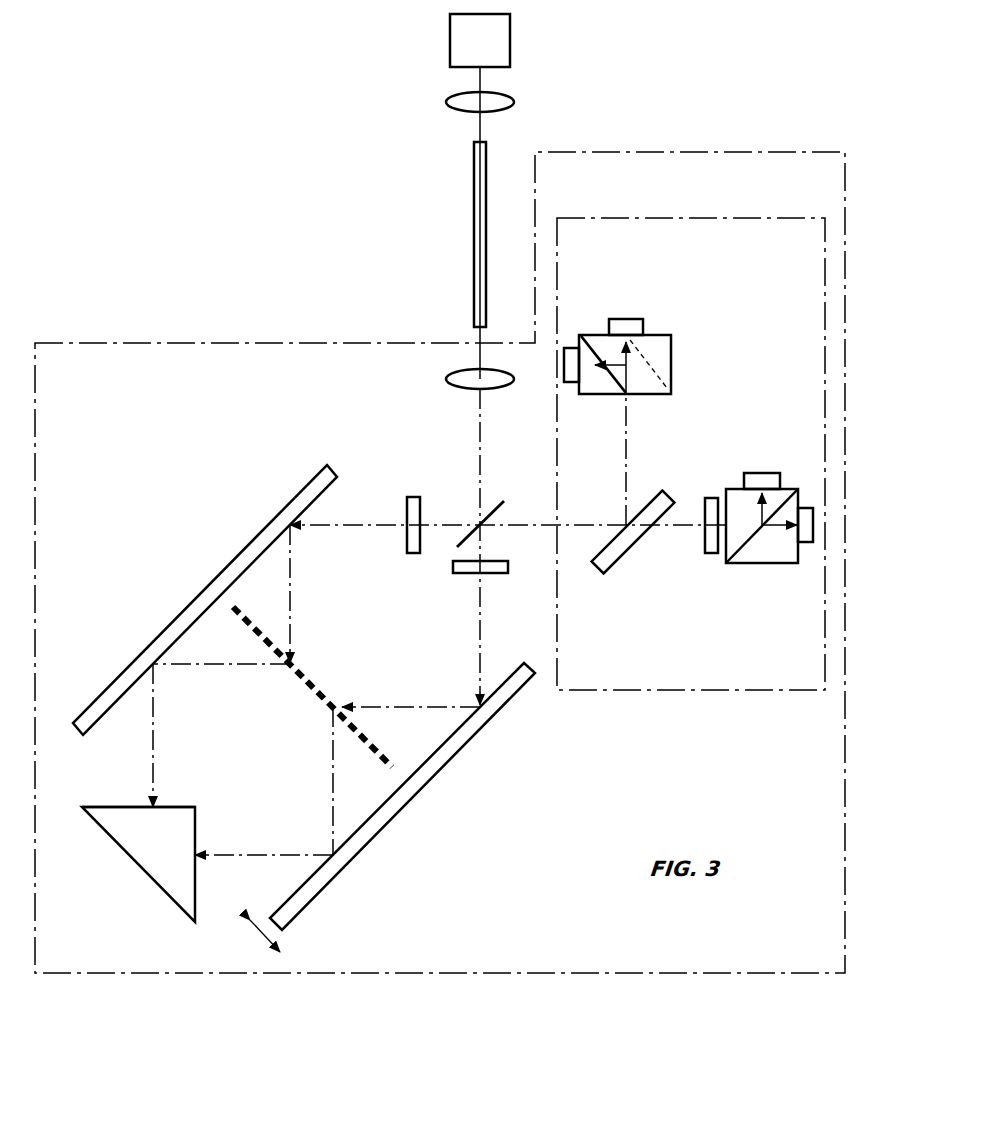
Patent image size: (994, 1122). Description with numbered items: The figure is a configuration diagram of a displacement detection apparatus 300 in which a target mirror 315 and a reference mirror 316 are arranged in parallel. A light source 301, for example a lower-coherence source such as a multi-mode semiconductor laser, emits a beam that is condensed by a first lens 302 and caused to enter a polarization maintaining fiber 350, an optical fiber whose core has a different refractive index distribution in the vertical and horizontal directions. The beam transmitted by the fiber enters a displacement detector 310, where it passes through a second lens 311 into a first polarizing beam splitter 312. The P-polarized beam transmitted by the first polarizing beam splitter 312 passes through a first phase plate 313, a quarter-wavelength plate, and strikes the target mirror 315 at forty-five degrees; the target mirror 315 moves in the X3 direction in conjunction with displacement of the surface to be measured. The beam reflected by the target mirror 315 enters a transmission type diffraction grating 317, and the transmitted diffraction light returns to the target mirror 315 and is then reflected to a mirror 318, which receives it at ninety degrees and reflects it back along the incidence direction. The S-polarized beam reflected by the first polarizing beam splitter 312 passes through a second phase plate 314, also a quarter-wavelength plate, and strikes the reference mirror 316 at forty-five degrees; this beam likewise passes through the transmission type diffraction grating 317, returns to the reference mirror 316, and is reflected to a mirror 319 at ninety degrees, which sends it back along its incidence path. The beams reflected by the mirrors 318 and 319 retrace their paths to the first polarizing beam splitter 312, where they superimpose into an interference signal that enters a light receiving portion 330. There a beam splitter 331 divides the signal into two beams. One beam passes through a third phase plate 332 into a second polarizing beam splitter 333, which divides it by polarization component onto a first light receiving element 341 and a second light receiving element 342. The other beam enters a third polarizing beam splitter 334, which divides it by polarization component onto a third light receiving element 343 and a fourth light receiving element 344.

The displacement detection apparatus 300 is at (158, 160).
The light source 301 is at (503, 40).
The first lens 302 is at (447, 102).
The polarization maintaining fiber 350 is at (480, 243).
The displacement detector 310 is at (107, 343).
The second lens 311 is at (455, 379).
The first polarizing beam splitter 312 is at (455, 545).
The first phase plate 313 is at (465, 567).
The second phase plate 314 is at (413, 497).
The target mirror 315 is at (413, 788).
The reference mirror 316 is at (207, 593).
The transmission type diffraction grating 317 is at (330, 693).
The mirror 318 is at (197, 827).
The mirror 319 is at (170, 805).
The light receiving portion 330 is at (752, 218).
The beam splitter 331 is at (617, 547).
The third phase plate 332 is at (713, 502).
The second polarizing beam splitter 333 is at (798, 497).
The third polarizing beam splitter 334 is at (668, 345).
The first light receiving element 341 is at (808, 542).
The second light receiving element 342 is at (757, 478).
The third light receiving element 343 is at (572, 355).
The fourth light receiving element 344 is at (637, 327).
The X3 direction X3 is at (260, 934).